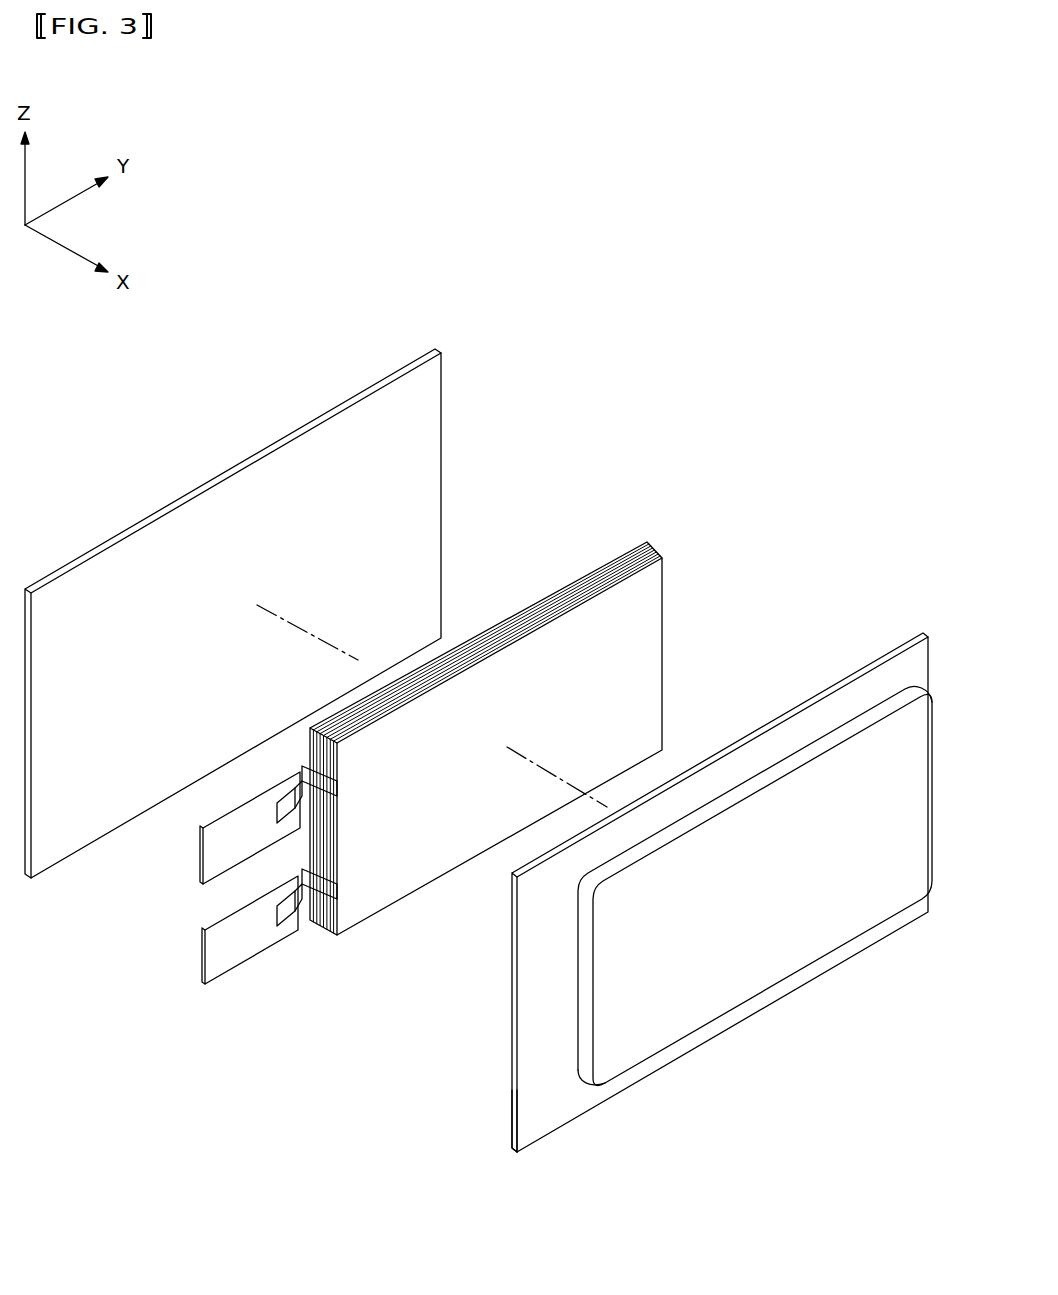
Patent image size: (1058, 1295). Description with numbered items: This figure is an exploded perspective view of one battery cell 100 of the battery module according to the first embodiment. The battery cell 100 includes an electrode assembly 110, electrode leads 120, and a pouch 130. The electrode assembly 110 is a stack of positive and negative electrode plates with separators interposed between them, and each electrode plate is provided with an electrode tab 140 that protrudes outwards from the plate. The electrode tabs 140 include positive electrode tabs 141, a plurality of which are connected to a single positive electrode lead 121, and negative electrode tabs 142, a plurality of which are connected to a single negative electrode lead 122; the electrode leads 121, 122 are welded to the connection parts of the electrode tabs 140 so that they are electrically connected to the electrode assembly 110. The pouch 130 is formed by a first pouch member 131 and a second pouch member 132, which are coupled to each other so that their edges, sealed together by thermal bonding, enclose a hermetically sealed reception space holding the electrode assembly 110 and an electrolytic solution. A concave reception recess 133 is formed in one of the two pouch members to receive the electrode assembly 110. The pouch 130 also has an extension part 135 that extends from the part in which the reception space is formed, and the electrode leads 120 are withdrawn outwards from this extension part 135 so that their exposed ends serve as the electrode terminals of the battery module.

The battery cell 100 is at (92, 377).
The electrode assembly 110 is at (427, 842).
The electrode leads 120 is at (125, 891).
The positive electrode lead 121 is at (213, 857).
The negative electrode lead 122 is at (213, 952).
The pouch 130 is at (740, 370).
The first pouch member 131 is at (433, 383).
The second pouch member 132 is at (877, 680).
The reception recess 133 is at (757, 963).
The extension part 135 is at (522, 1088).
The electrode tab 140 is at (357, 1055).
The positive electrode tabs 141 is at (312, 790).
The negative electrode tabs 142 is at (323, 895).